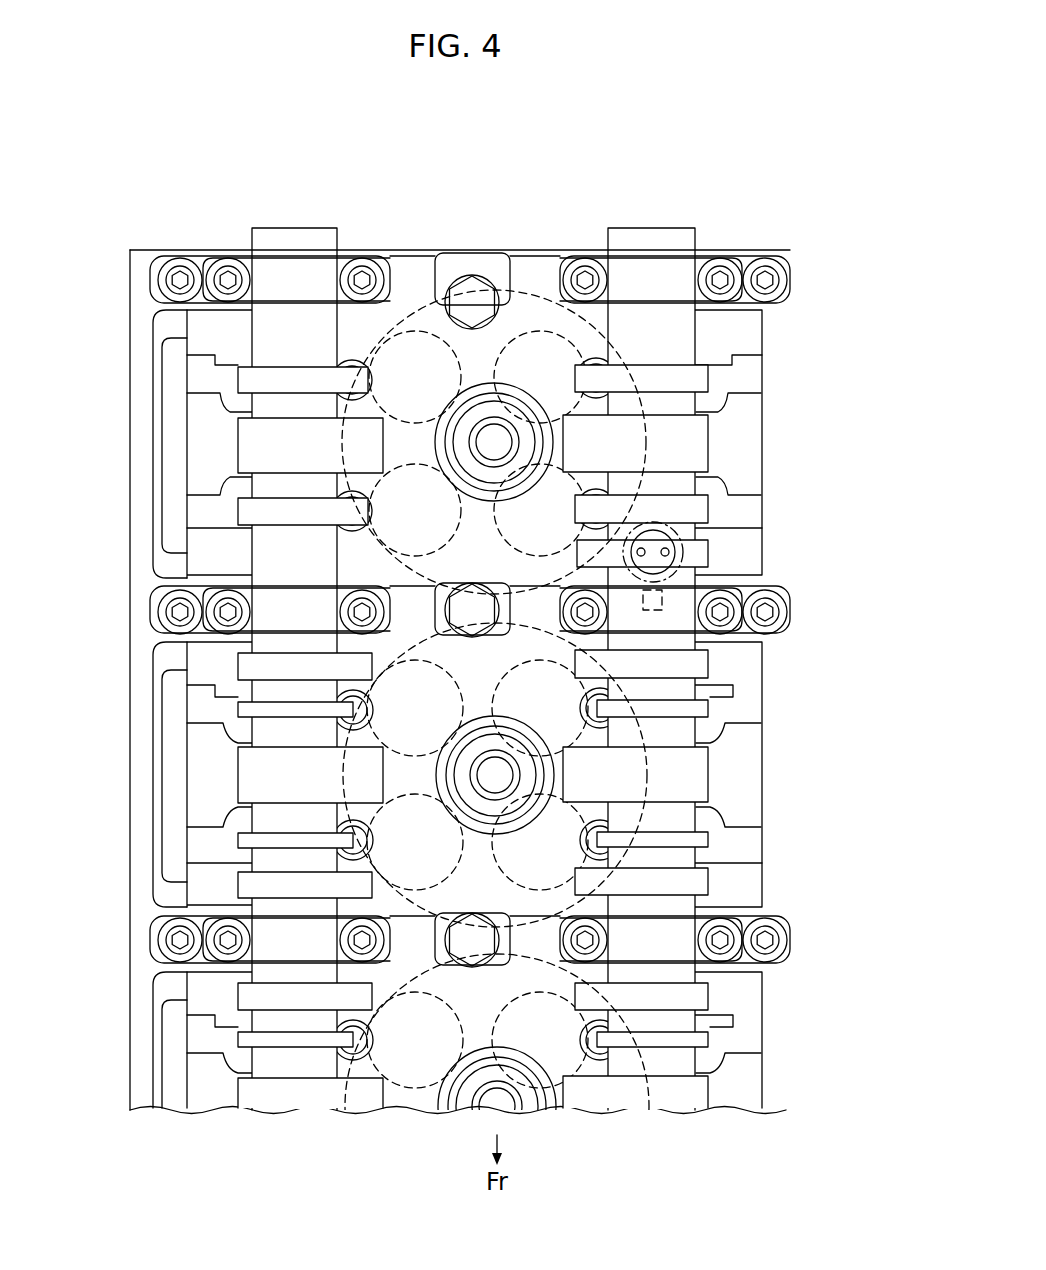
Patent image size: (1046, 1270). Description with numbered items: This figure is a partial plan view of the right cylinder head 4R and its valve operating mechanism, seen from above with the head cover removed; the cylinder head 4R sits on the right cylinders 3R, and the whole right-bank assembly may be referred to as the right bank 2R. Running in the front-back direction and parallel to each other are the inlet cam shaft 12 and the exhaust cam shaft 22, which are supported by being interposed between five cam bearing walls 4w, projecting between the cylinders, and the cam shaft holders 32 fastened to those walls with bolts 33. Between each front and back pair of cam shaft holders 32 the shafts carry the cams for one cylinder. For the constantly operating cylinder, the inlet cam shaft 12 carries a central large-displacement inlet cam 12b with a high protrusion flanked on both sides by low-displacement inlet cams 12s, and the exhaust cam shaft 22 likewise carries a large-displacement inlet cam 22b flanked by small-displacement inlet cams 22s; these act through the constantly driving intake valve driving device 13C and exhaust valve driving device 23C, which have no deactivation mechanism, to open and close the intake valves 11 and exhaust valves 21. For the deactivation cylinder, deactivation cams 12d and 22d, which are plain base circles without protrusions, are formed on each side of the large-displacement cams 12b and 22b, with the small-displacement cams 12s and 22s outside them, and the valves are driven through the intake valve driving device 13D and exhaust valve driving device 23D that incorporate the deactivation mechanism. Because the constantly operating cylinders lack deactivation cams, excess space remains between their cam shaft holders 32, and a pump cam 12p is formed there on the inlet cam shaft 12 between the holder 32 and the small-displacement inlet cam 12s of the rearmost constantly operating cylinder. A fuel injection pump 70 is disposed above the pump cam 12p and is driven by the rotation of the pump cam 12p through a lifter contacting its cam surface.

The right drive unit 2R is at (472, 208).
The cylinder head 4R is at (518, 250).
The cam bearing wall 4w is at (408, 250).
The cam shaft holder 32 is at (270, 260).
The bolt 33 is at (212, 257).
The exhaust cam shaft 22 is at (296, 240).
The inlet cam shaft 12 is at (650, 240).
The small-displacement inlet cam 22s is at (258, 380).
The large-displacement inlet cam 22b is at (255, 445).
The deactivation cam 22d is at (258, 710).
The low-displacement inlet cam 12s is at (700, 377).
The large-displacement inlet cam 12b is at (700, 445).
The deactivation cam 12d is at (700, 708).
The pump cam 12p is at (700, 553).
The constantly driving exhaust valve driving device 23C is at (178, 468).
The exhaust valve driving device 23D is at (178, 798).
The constantly driving intake valve driving device 13C is at (778, 464).
The intake valve driving device 13D is at (778, 797).
The exhaust valve 21 is at (365, 385).
The intake valve 11 is at (585, 398).
The right cylinder 3R is at (613, 360).
The fuel injection pump 70 is at (690, 545).